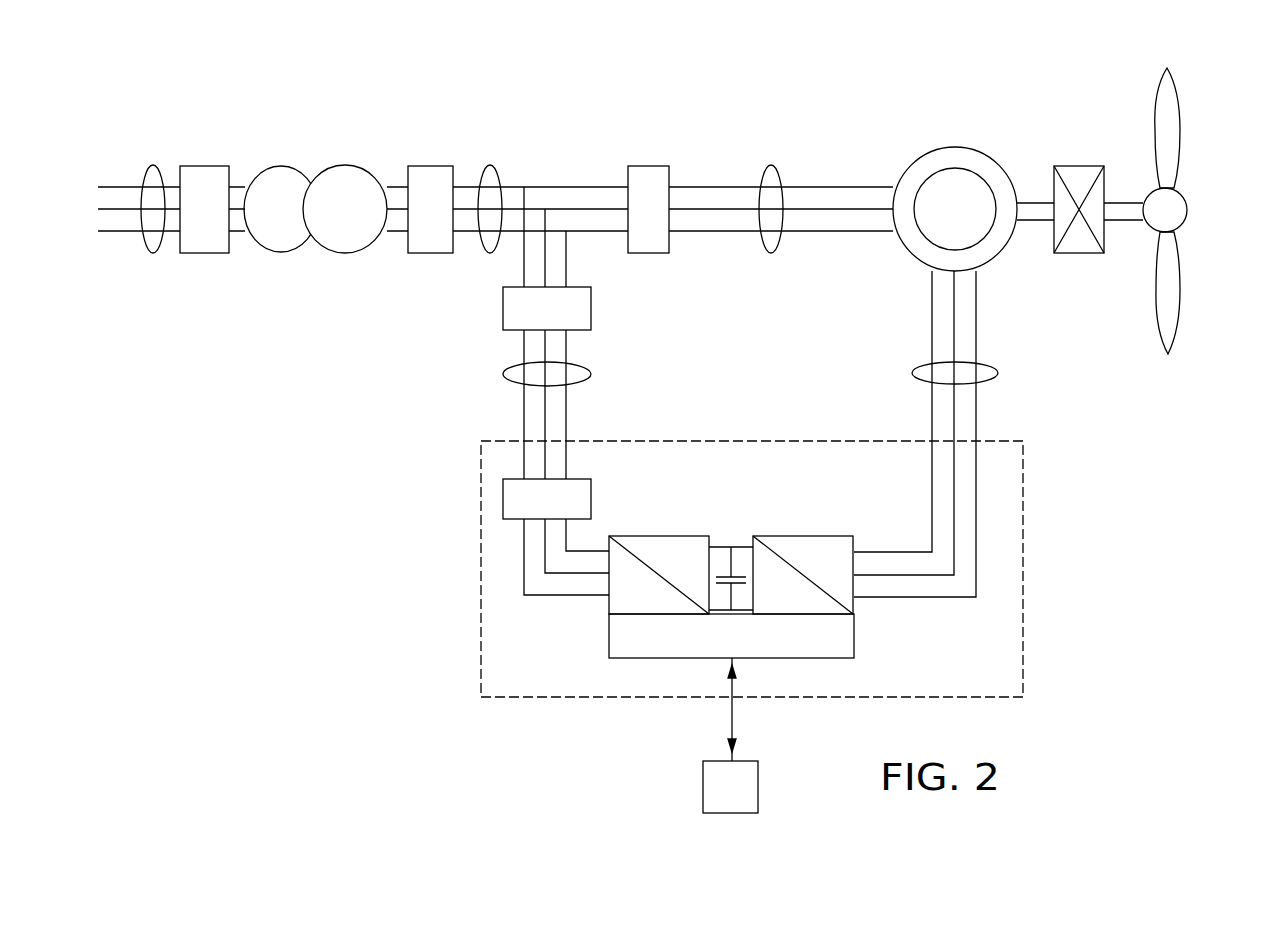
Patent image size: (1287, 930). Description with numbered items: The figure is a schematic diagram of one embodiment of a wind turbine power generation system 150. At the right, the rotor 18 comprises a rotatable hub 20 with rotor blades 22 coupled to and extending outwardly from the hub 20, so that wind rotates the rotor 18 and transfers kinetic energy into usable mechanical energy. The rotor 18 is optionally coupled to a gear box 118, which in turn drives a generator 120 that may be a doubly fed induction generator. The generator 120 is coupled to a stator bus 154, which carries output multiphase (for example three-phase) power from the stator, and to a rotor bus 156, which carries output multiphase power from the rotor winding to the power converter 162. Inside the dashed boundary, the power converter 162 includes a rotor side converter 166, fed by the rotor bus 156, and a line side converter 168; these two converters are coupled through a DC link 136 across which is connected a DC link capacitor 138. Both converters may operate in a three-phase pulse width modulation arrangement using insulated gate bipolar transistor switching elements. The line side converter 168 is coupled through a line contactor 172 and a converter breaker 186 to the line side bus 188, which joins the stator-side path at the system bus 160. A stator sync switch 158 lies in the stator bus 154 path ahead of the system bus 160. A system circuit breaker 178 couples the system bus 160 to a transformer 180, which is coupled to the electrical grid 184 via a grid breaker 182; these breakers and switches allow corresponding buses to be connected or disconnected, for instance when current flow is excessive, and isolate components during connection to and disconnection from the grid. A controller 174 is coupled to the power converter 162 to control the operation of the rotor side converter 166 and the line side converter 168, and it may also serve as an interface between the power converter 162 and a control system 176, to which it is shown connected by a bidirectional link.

The rotor 18 is at (1212, 120).
The rotatable hub 20 is at (1187, 207).
The rotor blade 22 is at (1182, 140).
The gear box 118 is at (1076, 166).
The generator 120 is at (950, 147).
The DC link 136 is at (738, 547).
The DC link capacitor 138 is at (720, 575).
The power system 150 is at (352, 557).
The stator bus 154 is at (770, 165).
The rotor bus 156 is at (998, 373).
The stator sync switch 158 is at (648, 166).
The system bus 160 is at (490, 165).
The power converter 162 is at (1030, 537).
The rotor side converter 166 is at (853, 605).
The line side converter 168 is at (609, 605).
The line contactor 172 is at (503, 500).
The controller 174 is at (650, 660).
The control system 176 is at (760, 783).
The system circuit breaker 178 is at (430, 166).
The transformer 180 is at (345, 166).
The grid breaker 182 is at (203, 166).
The electrical grid 184 is at (153, 165).
The converter breaker 186 is at (503, 310).
The line side bus 188 is at (503, 376).